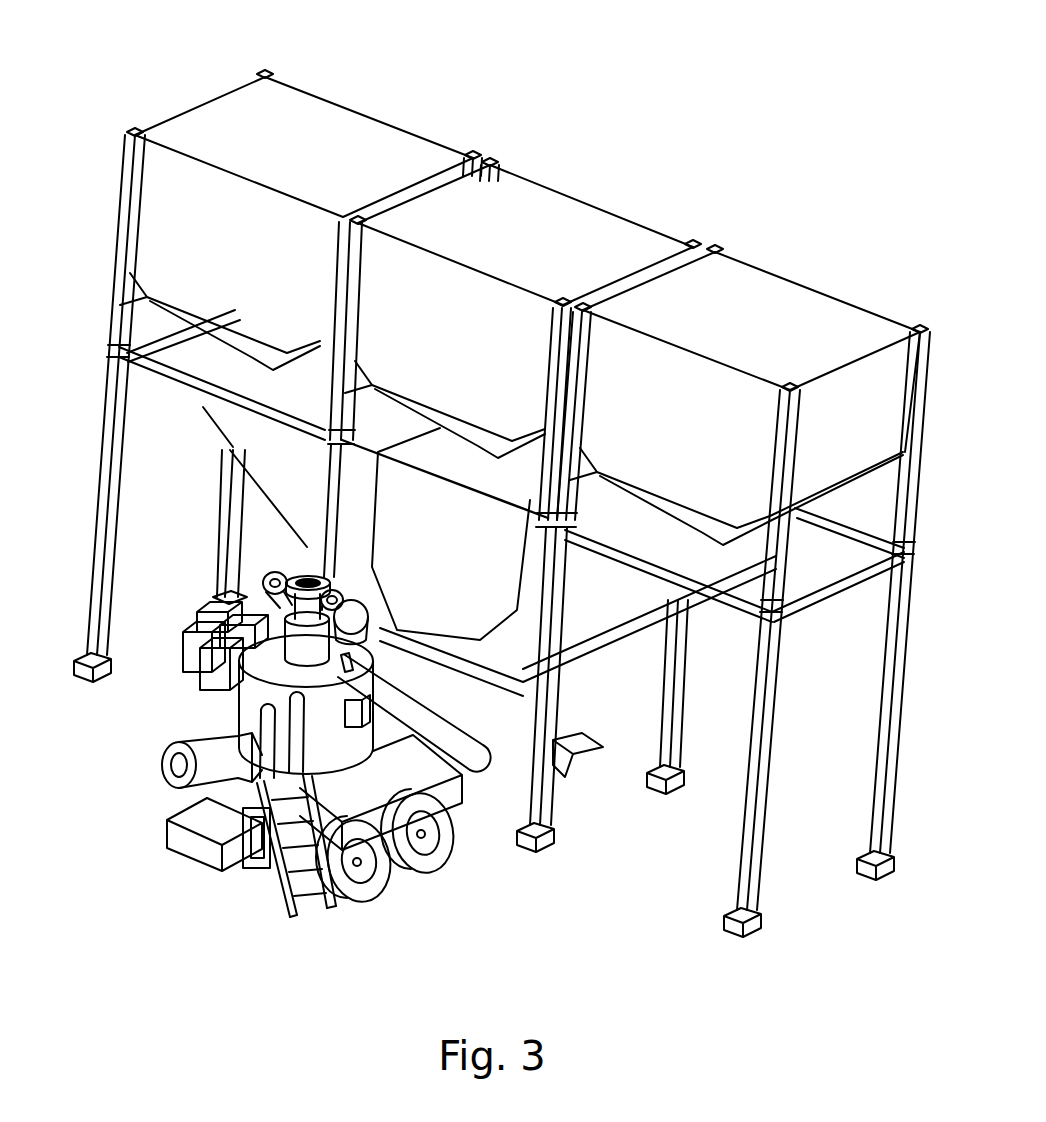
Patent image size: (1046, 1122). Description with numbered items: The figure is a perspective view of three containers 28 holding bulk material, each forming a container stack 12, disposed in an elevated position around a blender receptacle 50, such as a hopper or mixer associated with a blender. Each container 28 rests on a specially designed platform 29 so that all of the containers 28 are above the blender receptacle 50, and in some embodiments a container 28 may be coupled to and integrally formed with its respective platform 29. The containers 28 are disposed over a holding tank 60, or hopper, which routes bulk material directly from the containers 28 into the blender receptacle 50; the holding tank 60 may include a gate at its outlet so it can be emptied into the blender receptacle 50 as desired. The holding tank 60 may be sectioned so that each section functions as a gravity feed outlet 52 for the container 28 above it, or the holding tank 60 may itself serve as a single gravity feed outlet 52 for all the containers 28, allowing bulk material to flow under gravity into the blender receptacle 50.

The container stack 12 is at (138, 86).
The container 28 is at (328, 120).
The platform 29 is at (548, 447).
The gravity feed outlet 52 is at (237, 380).
The blender receptacle 50 is at (510, 730).
The holding tank 60 is at (232, 455).